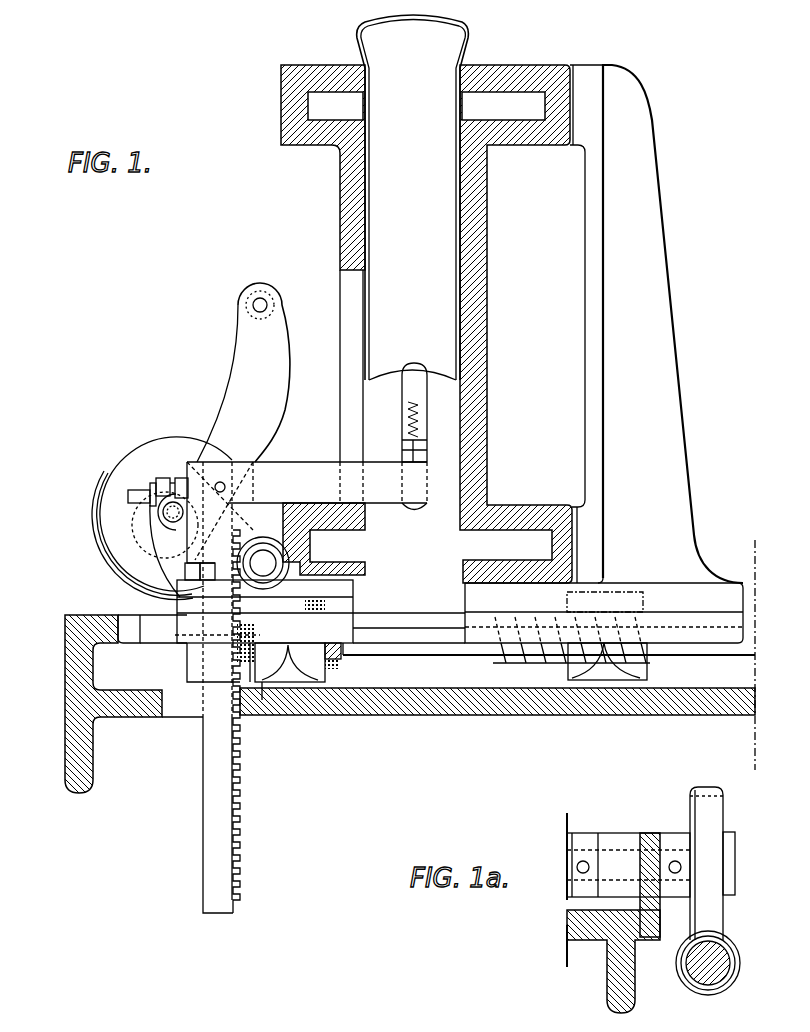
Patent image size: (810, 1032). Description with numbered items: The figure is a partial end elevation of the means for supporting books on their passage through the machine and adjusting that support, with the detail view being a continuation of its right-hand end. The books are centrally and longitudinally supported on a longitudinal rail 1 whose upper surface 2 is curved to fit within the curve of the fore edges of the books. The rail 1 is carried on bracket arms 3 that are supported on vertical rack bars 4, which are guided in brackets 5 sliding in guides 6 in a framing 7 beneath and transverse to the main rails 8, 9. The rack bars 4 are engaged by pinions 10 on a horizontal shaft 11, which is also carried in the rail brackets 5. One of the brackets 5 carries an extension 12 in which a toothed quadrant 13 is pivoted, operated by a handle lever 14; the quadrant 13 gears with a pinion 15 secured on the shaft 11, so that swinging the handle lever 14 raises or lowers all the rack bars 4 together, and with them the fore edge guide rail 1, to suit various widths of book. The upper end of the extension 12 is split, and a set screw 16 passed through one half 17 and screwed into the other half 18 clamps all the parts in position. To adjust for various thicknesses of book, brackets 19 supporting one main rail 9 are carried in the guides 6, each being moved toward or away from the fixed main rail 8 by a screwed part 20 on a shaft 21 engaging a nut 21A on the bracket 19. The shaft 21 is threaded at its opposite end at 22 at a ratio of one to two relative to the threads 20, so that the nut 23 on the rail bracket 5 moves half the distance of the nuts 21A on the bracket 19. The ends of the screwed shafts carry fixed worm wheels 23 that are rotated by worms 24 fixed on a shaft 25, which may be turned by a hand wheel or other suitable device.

In FIG. 1, the longitudinal rail 1 is at (410, 392).
In FIG. 1, the upper surface 2 is at (413, 360).
In FIG. 1, the bracket arms 3 is at (306, 521).
In FIG. 1, the vertical rack bars 4 is at (215, 768).
In FIG. 1, the brackets 5 is at (180, 602).
In FIG. 1, the guides 6 is at (152, 630).
In FIG. 1, the framing 7 is at (93, 773).
In FIG. 1a, the framing 7 is at (610, 1000).
In FIG. 1, the main rail 8 is at (340, 195).
In FIG. 1, the main rail 9 is at (487, 265).
In FIG. 1, the pinions 10 is at (262, 712).
In FIG. 1, the horizontal shaft 11 is at (305, 585).
In FIG. 1, the extension 12 is at (175, 562).
In FIG. 1, the toothed quadrant 13 is at (98, 505).
In FIG. 1, the handle lever 14 is at (243, 372).
In FIG. 1, the pinion 15 is at (310, 548).
In FIG. 1, the set screw 16 is at (133, 490).
In FIG. 1, the half of the split part 17 is at (160, 478).
In FIG. 1, the half of the split part 18 is at (183, 478).
In FIG. 1, the brackets 19 is at (662, 417).
In FIG. 1, the screwed part 20 is at (530, 665).
In FIG. 1, the shaft 21 is at (418, 657).
In FIG. 1a, the shaft 21 is at (620, 850).
In FIG. 1, the nut 21A is at (612, 682).
In FIG. 1, the threads 22 is at (340, 690).
In FIG. 1, the nut / worm wheel 23 is at (300, 690).
In FIG. 1a, the nut / worm wheel 23 is at (705, 810).
In FIG. 1a, the worms 24 is at (730, 980).
In FIG. 1a, the shaft 25 is at (693, 968).